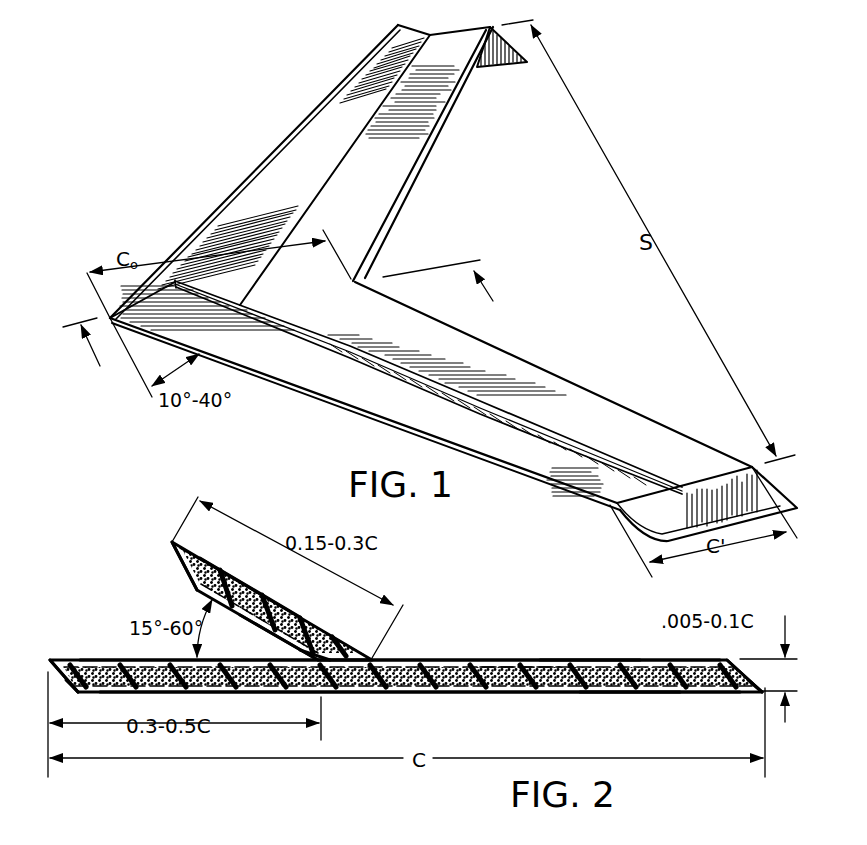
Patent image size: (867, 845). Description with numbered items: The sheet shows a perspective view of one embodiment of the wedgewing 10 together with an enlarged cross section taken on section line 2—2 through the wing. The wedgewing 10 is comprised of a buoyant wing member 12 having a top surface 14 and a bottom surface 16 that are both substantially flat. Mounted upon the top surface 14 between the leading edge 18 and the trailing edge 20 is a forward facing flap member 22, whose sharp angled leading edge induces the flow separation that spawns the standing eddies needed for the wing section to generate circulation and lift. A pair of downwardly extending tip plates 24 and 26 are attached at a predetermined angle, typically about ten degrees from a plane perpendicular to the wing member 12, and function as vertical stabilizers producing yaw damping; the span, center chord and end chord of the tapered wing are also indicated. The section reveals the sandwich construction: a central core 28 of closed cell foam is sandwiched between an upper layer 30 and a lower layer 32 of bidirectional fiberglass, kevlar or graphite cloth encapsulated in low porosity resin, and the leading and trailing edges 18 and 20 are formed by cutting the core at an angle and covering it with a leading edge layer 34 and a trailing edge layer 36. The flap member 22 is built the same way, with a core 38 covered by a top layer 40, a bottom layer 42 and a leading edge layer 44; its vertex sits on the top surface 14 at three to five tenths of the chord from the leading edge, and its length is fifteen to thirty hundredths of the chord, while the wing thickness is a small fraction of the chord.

In FIG. 1, the section line 2— 2 is at (284, 329).
In FIG. 1, the wedgewing 10 is at (453, 287).
In FIG. 1, the buoyant wing member 12 is at (431, 396).
In FIG. 2, the buoyant wing member 12 is at (399, 663).
In FIG. 1, the top surface 14 is at (521, 465).
In FIG. 2, the top surface 14 is at (402, 659).
In FIG. 2, the bottom surface 16 is at (458, 693).
In FIG. 1, the leading edge 18 is at (243, 180).
In FIG. 2, the leading edge 18 is at (50, 661).
In FIG. 1, the trailing edge 20 is at (428, 155).
In FIG. 2, the trailing edge 20 is at (736, 668).
In FIG. 1, the flap member 22 is at (564, 434).
In FIG. 2, the flap member 22 is at (245, 582).
In FIG. 1, the tip plate 24 is at (637, 516).
In FIG. 1, the tip plate 26 is at (494, 63).
In FIG. 2, the central core 28 is at (508, 659).
In FIG. 2, the upper layer 30 is at (564, 659).
In FIG. 2, the lower layer 32 is at (617, 692).
In FIG. 2, the leading edge layer 34 is at (80, 689).
In FIG. 2, the trailing edge layer 36 is at (744, 692).
In FIG. 2, the flap core 38 is at (260, 587).
In FIG. 2, the flap top layer 40 is at (314, 643).
In FIG. 2, the flap bottom layer 42 is at (277, 634).
In FIG. 2, the flap leading edge layer 44 is at (190, 575).